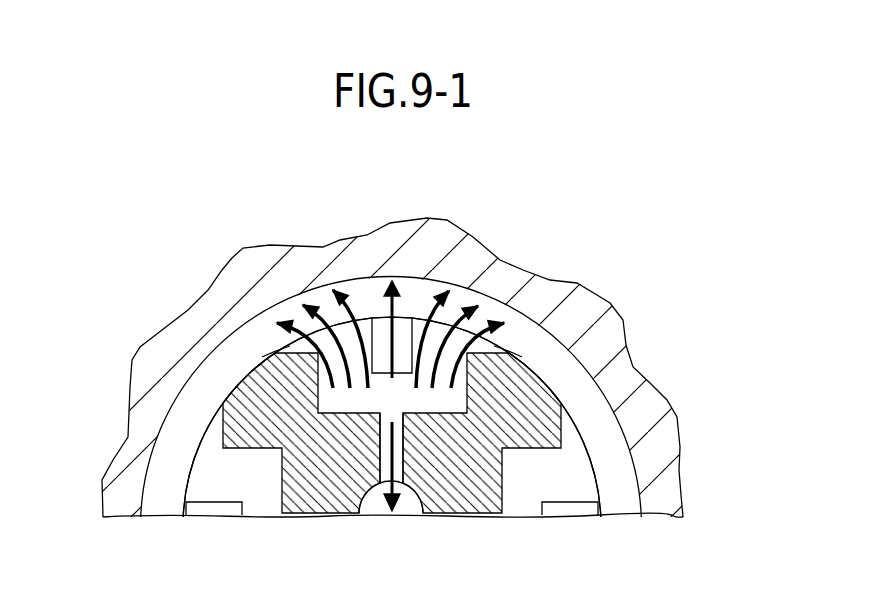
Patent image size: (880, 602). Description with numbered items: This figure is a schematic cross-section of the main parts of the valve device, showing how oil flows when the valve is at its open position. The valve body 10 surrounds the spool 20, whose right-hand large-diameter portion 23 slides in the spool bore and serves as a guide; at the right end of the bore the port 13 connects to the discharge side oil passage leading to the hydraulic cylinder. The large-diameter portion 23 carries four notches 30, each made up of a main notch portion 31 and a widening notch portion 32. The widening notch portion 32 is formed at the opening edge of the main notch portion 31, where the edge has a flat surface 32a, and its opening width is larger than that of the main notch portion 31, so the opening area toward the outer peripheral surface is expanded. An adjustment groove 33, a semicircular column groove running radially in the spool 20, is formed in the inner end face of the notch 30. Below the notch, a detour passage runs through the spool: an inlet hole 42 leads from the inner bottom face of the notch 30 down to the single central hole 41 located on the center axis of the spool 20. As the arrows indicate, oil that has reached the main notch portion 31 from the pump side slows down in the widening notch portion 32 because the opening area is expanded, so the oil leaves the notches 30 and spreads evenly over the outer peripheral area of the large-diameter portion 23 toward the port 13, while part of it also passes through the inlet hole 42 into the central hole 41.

The valve body 10 is at (679, 455).
The port 13 is at (554, 308).
The spool 20 is at (197, 423).
The large-diameter portion 23 is at (541, 379).
The notch 30 is at (520, 175).
The main notch portion 31 is at (432, 399).
The widening notch portion 32 is at (435, 338).
The flat surface 32a is at (277, 349).
The adjustment groove 33 is at (404, 344).
The central hole 41 is at (372, 499).
The inlet hole 42 is at (404, 480).